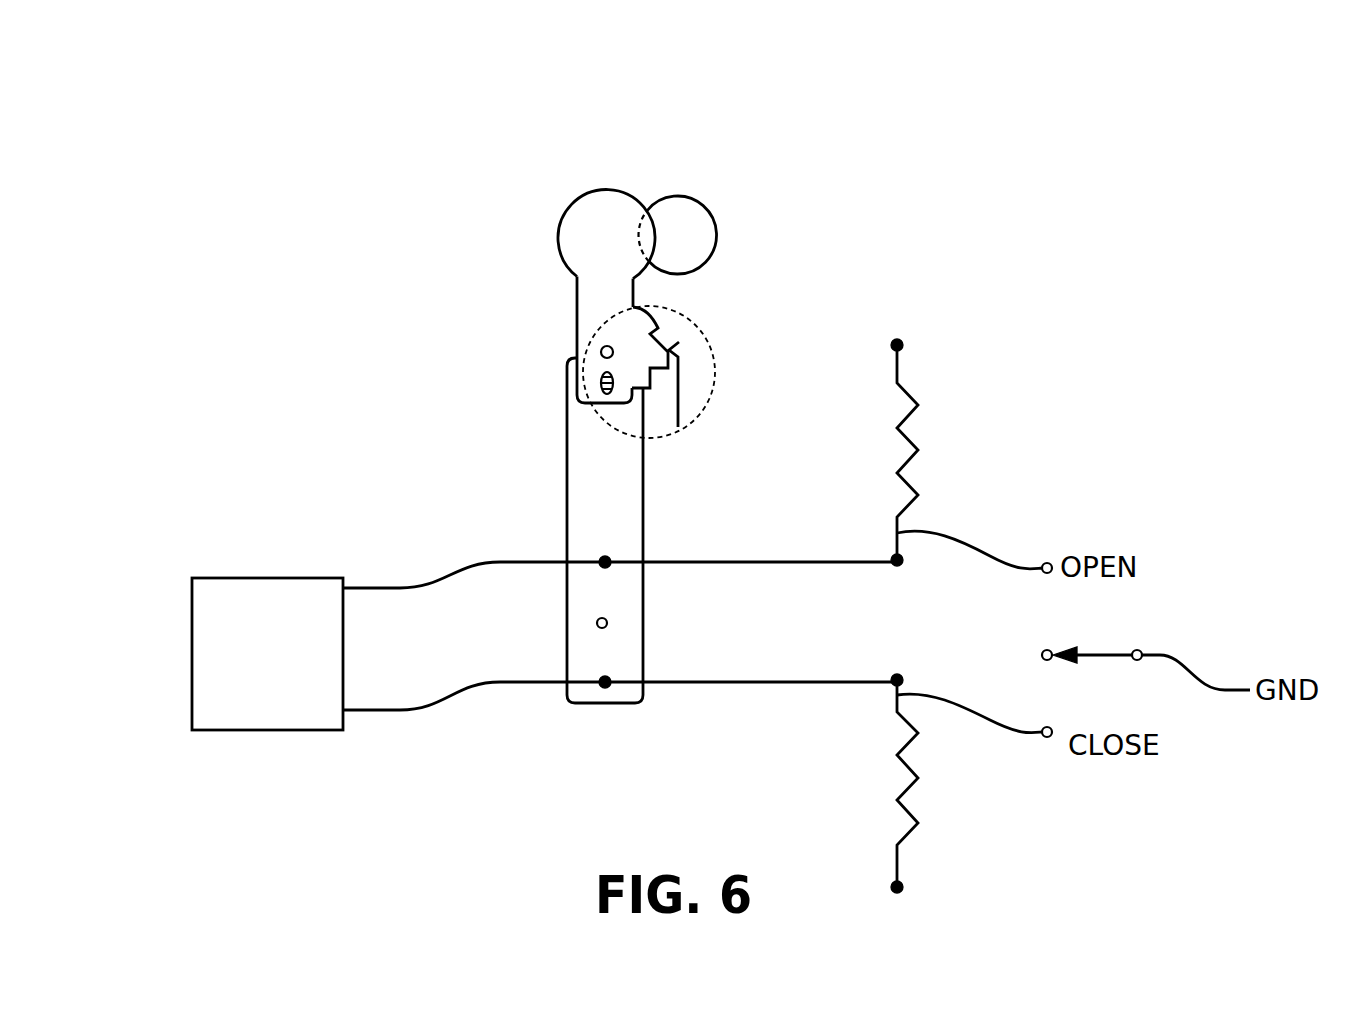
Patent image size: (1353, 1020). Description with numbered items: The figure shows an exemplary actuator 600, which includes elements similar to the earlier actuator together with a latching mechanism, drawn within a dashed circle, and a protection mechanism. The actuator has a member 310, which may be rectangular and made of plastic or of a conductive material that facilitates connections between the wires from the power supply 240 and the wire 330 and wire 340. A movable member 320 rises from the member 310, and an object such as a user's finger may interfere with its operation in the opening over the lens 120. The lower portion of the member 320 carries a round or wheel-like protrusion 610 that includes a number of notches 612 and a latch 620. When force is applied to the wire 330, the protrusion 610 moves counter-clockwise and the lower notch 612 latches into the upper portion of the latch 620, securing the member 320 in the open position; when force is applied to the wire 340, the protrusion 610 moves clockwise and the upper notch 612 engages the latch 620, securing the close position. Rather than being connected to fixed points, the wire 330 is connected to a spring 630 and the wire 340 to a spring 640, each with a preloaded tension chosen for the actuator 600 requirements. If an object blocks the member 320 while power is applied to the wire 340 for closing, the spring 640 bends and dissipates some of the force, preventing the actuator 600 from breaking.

The actuator 600 is at (258, 98).
The power supply 240 is at (267, 654).
The lens 120 is at (713, 236).
The member 320 is at (590, 287).
The member 310 is at (578, 476).
The wire 330 is at (720, 553).
The wire 340 is at (728, 673).
The protrusion 610 is at (630, 328).
The notches 612 is at (668, 327).
The latch 620 is at (678, 413).
The spring 630 is at (897, 365).
The spring 640 is at (897, 848).